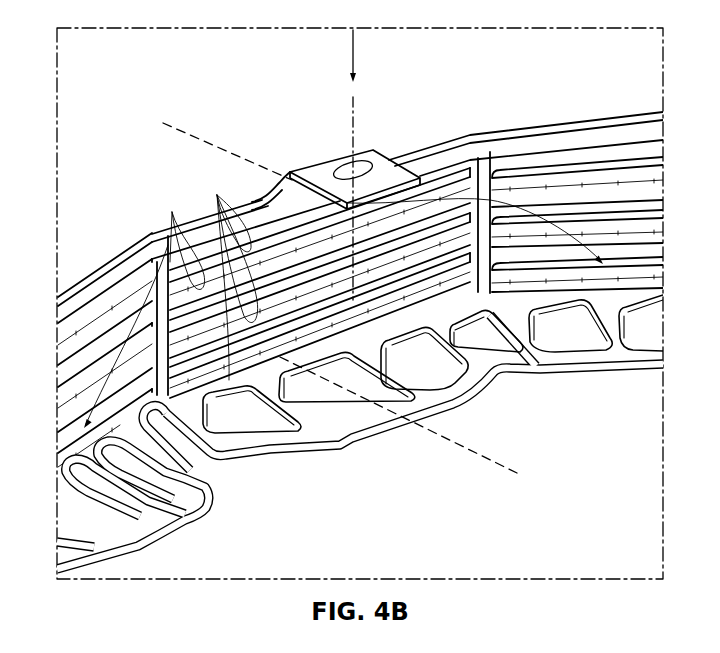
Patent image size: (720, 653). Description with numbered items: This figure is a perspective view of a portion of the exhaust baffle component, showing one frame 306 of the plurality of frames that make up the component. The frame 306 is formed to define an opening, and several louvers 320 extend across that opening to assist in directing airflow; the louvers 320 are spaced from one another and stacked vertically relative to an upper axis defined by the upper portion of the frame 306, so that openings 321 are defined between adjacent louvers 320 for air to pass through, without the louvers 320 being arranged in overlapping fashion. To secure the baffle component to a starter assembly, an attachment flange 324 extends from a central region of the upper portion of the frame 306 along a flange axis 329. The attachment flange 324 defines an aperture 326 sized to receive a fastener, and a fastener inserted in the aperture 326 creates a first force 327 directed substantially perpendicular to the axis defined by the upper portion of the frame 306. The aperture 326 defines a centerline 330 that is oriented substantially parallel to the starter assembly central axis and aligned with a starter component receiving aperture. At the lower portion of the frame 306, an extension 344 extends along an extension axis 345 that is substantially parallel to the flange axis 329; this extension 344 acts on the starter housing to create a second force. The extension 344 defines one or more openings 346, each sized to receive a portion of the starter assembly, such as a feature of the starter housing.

The frame 306 is at (478, 126).
The louver 320 is at (143, 307).
The opening 321 is at (400, 273).
The attachment flange 324 is at (371, 150).
The aperture 326 is at (343, 161).
The first force 327 is at (358, 47).
The flange axis 329 is at (182, 128).
The centerline 330 is at (350, 122).
The extension 344 is at (414, 451).
The extension axis 345 is at (498, 466).
The opening 346 is at (271, 436).